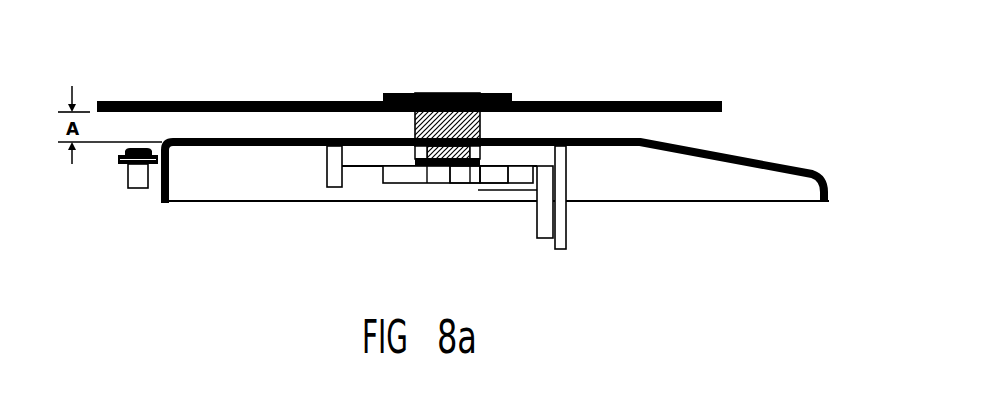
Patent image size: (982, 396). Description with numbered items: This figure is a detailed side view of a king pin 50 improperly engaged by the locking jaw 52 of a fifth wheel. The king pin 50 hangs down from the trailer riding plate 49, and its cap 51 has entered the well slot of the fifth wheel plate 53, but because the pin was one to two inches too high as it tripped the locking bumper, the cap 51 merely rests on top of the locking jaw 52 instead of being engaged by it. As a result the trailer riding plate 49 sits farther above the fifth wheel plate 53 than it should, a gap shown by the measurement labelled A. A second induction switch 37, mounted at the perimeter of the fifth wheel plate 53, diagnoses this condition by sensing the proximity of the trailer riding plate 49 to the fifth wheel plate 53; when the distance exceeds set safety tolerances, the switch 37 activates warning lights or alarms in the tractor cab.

The second induction switch 37 is at (142, 189).
The trailer riding plate 49 is at (528, 101).
The king pin 50 is at (435, 93).
The cap 51 is at (481, 161).
The locking jaw 52 is at (476, 185).
The fifth wheel plate 53 is at (285, 141).